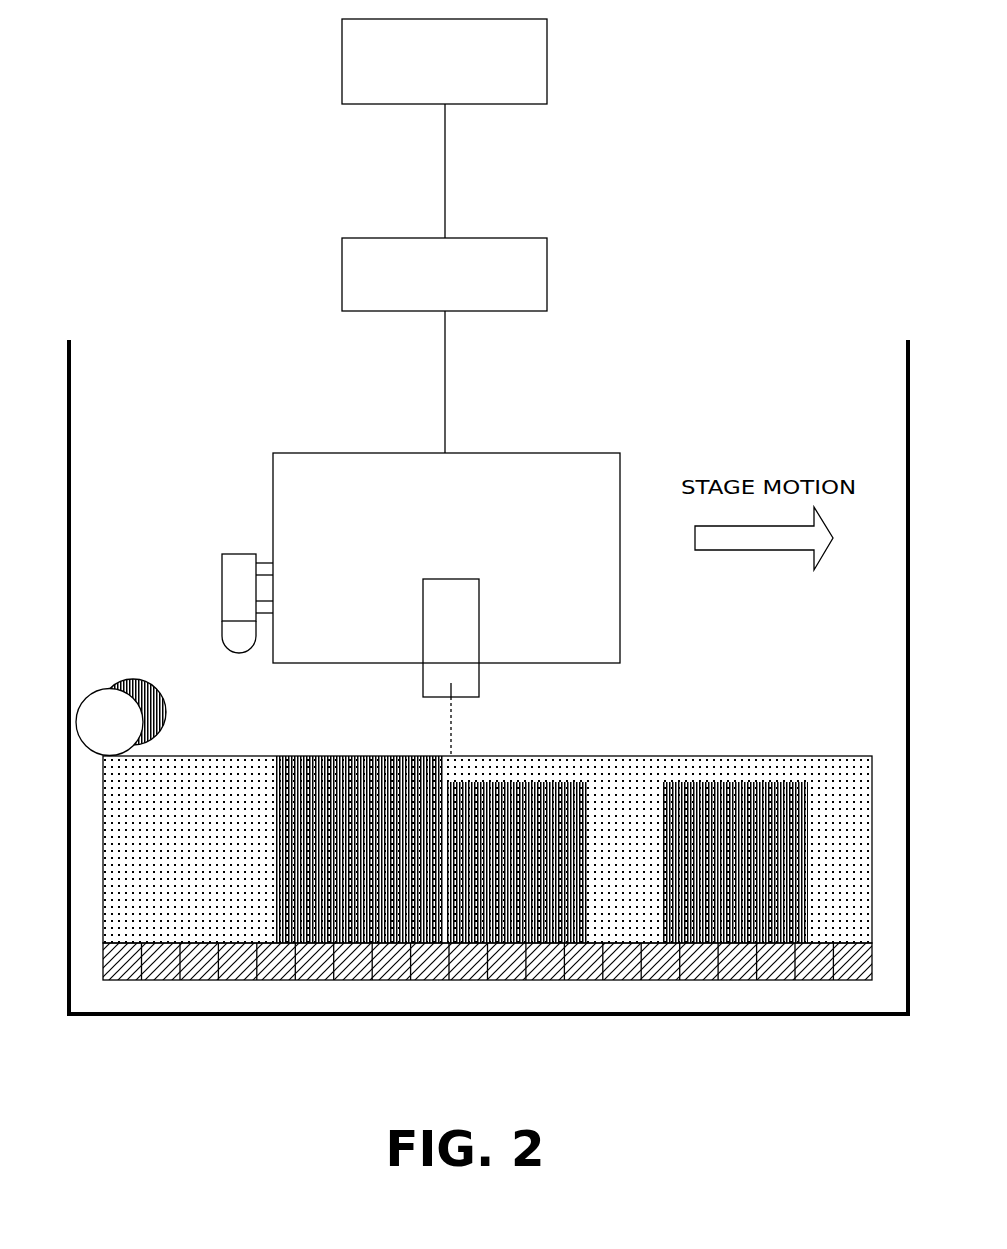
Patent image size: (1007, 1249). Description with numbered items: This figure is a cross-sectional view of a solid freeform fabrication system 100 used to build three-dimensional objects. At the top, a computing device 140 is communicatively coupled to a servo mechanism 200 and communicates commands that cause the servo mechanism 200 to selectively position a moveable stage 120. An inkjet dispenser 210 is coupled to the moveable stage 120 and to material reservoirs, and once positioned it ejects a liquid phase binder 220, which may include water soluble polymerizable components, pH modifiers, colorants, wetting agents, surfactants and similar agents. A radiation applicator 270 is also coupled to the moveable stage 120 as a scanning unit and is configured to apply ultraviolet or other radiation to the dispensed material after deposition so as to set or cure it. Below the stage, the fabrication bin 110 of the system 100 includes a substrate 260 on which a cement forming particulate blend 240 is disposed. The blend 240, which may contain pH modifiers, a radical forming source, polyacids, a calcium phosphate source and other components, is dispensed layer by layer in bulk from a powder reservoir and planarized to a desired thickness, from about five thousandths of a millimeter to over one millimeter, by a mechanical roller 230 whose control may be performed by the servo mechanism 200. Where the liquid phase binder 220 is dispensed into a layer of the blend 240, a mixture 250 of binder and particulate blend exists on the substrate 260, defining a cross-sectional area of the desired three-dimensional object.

The solid freeform fabrication system 100 is at (785, 168).
The fabrication bin 110 is at (111, 322).
The moveable stage 120 is at (463, 502).
The computing device 140 is at (547, 60).
The servo mechanism 200 is at (547, 272).
The inkjet dispenser 210 is at (479, 611).
The liquid phase binder 220 is at (452, 728).
The mechanical roller 230 is at (119, 703).
The cement forming particulate blend 240 is at (187, 757).
The mixture 250 is at (315, 757).
The substrate 260 is at (617, 1005).
The radiation applicator 270 is at (238, 553).